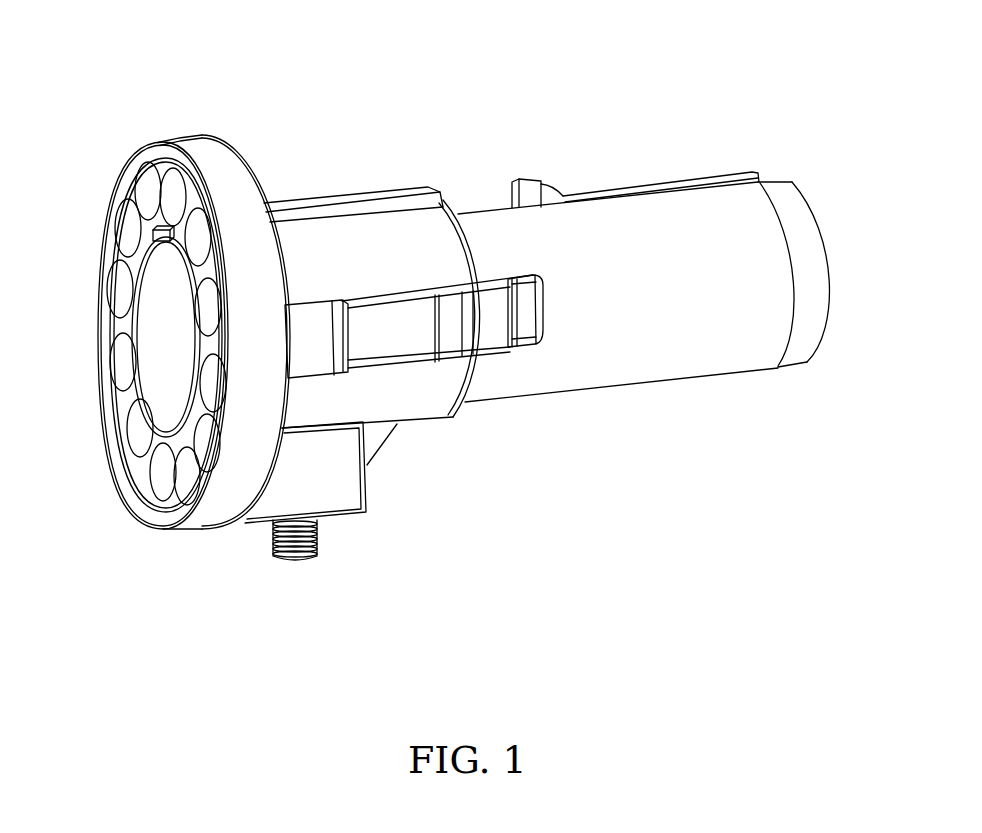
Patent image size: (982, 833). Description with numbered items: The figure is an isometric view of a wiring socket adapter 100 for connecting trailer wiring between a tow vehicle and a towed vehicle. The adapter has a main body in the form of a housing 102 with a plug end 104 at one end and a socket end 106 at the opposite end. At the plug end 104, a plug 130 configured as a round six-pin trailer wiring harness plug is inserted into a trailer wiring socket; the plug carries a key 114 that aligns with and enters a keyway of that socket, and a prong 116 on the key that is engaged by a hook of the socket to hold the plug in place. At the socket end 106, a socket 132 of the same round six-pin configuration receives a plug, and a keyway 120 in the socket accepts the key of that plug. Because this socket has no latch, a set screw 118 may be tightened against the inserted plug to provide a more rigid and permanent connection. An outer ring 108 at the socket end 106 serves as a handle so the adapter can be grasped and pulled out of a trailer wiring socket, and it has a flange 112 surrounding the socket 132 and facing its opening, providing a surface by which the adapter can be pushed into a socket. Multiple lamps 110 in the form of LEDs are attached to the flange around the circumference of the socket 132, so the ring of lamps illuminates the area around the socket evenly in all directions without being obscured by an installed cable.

The wiring socket adapter 100 is at (332, 37).
The housing 102 is at (368, 192).
The plug end 104 is at (625, 383).
The socket end 106 is at (270, 200).
The outer ring 108 is at (223, 513).
The lamps 110 is at (162, 475).
The flange 112 is at (153, 168).
The key 114 is at (657, 182).
The prong 116 is at (510, 190).
The set screw 118 is at (292, 562).
The keyway 120 is at (150, 235).
The plug 130 is at (827, 280).
The socket 132 is at (168, 368).